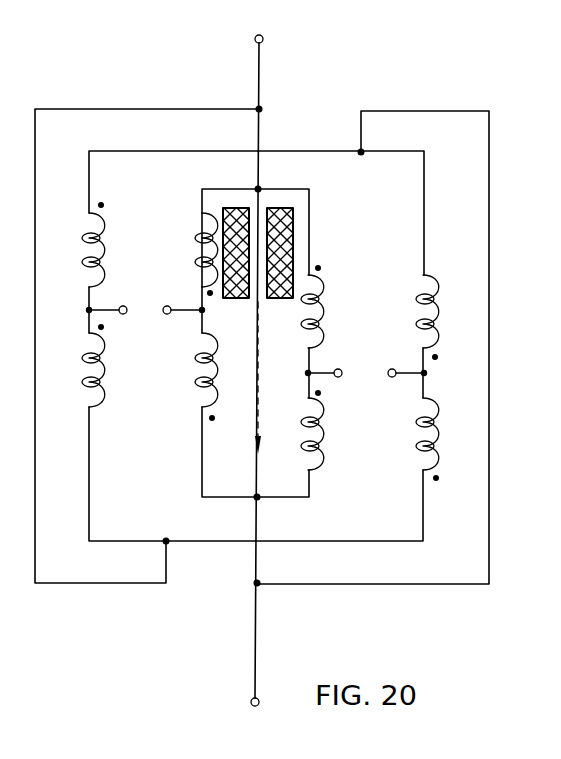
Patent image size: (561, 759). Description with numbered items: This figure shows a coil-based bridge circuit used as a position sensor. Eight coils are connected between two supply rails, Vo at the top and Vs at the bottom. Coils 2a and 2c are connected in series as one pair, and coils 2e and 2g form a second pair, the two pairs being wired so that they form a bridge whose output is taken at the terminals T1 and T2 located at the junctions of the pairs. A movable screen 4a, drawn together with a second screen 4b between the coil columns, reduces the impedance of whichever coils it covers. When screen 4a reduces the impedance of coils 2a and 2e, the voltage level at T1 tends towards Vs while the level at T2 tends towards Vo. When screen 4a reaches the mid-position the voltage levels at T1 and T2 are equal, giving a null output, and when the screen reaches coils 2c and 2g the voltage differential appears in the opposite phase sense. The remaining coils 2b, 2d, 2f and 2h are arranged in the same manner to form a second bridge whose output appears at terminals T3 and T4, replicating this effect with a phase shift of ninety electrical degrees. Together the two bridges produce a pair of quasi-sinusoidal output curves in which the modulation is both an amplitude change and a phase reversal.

The coil 2a is at (76, 244).
The coil 2b is at (332, 306).
The coil 2c is at (76, 365).
The coil 2d is at (331, 430).
The coil 2e is at (191, 254).
The coil 2f is at (444, 317).
The coil 2g is at (191, 377).
The coil 2h is at (447, 439).
The screen 4a is at (230, 301).
The screen 4b is at (274, 313).
The terminal T1 is at (113, 297).
The terminal T2 is at (178, 297).
The terminal T3 is at (333, 358).
The terminal T4 is at (398, 358).
The supply voltage Vo is at (261, 22).
The supply voltage Vs is at (257, 725).